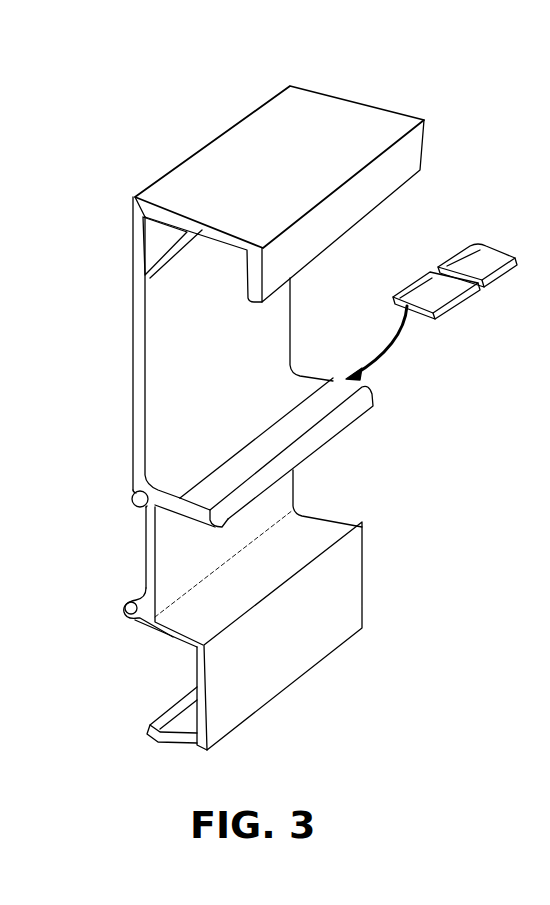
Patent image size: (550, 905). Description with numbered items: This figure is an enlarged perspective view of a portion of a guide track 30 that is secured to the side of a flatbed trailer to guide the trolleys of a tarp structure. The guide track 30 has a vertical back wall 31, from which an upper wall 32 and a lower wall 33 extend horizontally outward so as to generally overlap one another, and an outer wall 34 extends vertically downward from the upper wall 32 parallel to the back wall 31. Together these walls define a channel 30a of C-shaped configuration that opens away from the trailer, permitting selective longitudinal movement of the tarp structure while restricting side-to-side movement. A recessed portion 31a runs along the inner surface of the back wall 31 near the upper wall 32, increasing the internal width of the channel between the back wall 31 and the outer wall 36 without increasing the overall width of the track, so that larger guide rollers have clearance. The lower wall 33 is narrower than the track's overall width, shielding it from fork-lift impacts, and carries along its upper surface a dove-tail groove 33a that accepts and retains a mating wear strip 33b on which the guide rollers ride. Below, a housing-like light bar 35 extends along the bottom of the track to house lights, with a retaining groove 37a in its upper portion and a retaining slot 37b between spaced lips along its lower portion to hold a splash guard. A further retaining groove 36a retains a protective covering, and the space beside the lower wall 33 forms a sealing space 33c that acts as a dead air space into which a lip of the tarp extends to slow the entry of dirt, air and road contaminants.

The guide track 30 is at (147, 137).
The channel 30a is at (392, 230).
The back wall 31 is at (133, 442).
The recessed portion 31a is at (160, 242).
The upper wall 32 is at (133, 195).
The lower wall 33 is at (345, 418).
The groove 33a is at (340, 394).
The wear strip 33b is at (482, 253).
The sealing space 33c is at (313, 492).
The outer wall 34 is at (388, 160).
The light bar 35 is at (362, 598).
The outer wall 36 is at (545, 144).
The retaining groove 36a is at (142, 496).
The retaining groove 37a is at (138, 609).
The retaining slot 37b is at (155, 735).